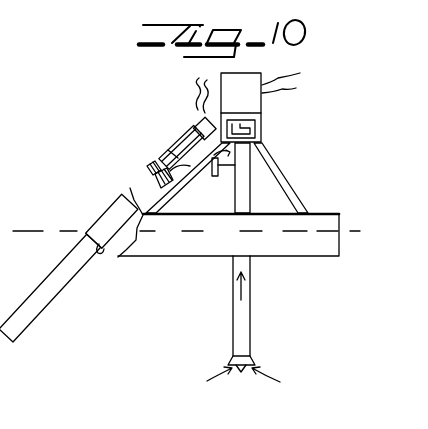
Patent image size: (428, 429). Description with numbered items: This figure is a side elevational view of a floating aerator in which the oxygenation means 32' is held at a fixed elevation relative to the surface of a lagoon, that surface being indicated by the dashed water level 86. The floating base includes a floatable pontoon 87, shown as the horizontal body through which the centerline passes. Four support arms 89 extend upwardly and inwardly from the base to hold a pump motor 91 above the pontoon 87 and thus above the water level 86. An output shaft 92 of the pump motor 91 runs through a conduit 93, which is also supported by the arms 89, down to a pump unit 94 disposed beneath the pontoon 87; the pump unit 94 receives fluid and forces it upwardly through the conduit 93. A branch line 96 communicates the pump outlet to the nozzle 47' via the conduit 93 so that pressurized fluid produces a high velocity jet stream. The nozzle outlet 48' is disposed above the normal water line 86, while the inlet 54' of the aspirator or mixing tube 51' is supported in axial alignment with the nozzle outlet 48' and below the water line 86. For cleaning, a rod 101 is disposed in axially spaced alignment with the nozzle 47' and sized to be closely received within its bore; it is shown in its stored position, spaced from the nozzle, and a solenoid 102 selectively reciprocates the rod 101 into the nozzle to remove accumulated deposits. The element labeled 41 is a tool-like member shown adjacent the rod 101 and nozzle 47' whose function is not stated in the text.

The oxygenation means 32' is at (106, 216).
The tool 41 is at (186, 146).
The nozzle 47' is at (132, 161).
The nozzle outlet 48' is at (136, 177).
The mixing tube 51' is at (50, 288).
The inlet 54' is at (106, 270).
The water level 86 is at (23, 231).
The pontoon 87 is at (323, 257).
The support arm 89 is at (178, 188).
The pump motor 91 is at (262, 103).
The output shaft 92 is at (256, 128).
The conduit 93 is at (250, 300).
The pump unit 94 is at (232, 360).
The branch line 96 is at (229, 178).
The rod 101 is at (168, 150).
The solenoid 102 is at (197, 122).